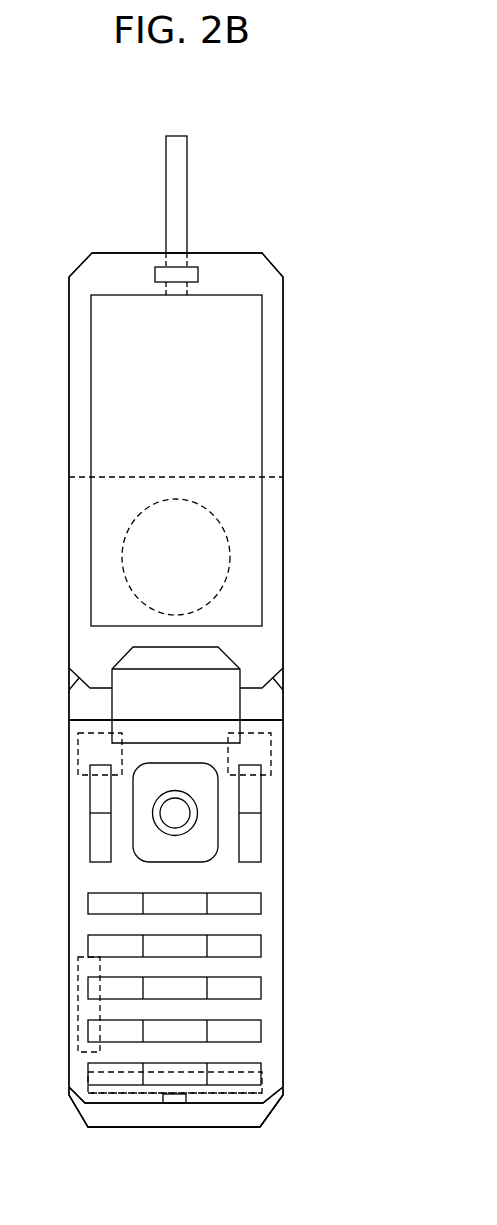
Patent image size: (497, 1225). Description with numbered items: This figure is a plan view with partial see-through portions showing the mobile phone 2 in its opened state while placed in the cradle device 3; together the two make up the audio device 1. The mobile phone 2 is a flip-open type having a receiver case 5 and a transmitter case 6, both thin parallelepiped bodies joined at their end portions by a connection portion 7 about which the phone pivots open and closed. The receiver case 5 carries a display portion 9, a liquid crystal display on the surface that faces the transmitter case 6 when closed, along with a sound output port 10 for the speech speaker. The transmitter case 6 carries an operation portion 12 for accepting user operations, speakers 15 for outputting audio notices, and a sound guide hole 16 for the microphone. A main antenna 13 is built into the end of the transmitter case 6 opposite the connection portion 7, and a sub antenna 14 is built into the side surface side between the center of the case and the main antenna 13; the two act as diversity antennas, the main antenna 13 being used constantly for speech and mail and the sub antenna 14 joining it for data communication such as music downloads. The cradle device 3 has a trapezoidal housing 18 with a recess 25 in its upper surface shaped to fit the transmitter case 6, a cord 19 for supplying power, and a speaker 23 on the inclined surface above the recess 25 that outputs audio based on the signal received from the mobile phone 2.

The audio device 1 is at (319, 166).
The mobile phone 2 is at (275, 802).
The cradle device 3 is at (272, 1098).
The receiver case 5 is at (275, 440).
The transmitter case 6 is at (275, 842).
The connection portion 7 is at (228, 713).
The display portion 9 is at (262, 363).
The sound output port 10 is at (190, 270).
The operation portion 12 is at (275, 963).
The main antenna 13 is at (230, 1093).
The sub antenna 14 is at (78, 1005).
The speakers 15 is at (271, 750).
The sound guide hole 16 is at (178, 1103).
The housing 18 is at (262, 1115).
The cord 19 is at (187, 182).
The speaker 23 is at (122, 557).
The recess 25 is at (262, 1073).